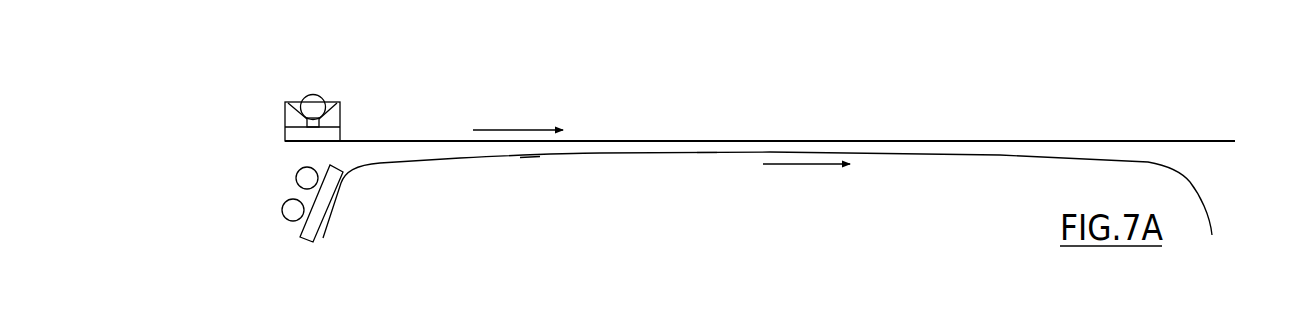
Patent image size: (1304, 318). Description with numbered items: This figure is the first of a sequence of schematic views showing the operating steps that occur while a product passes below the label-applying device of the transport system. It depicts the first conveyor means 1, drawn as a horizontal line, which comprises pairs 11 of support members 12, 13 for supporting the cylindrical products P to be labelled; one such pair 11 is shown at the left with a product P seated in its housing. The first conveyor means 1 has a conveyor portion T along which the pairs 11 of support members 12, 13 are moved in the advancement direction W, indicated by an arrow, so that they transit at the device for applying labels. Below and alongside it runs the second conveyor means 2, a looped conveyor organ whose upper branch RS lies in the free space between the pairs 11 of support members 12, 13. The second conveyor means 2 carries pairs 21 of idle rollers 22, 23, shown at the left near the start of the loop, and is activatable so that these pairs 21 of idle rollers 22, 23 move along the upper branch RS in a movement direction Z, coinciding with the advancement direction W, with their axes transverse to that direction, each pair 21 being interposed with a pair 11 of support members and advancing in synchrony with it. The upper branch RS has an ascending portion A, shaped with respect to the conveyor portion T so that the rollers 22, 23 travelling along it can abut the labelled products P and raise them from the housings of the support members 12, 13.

The first conveyor means 1 is at (1214, 151).
The second conveyor means 2 is at (429, 184).
The pair of support members 11 is at (263, 128).
The support member 12 is at (246, 76).
The support member 13 is at (285, 101).
The pair of idle rollers 21 is at (299, 240).
The idle roller 22 is at (283, 209).
The idle roller 23 is at (300, 169).
The cylindrical product P is at (310, 95).
The conveyor portion T is at (437, 140).
The advancement direction W is at (518, 110).
The movement direction Z is at (806, 185).
The ascending portion A is at (528, 158).
The upper branch RS is at (707, 156).